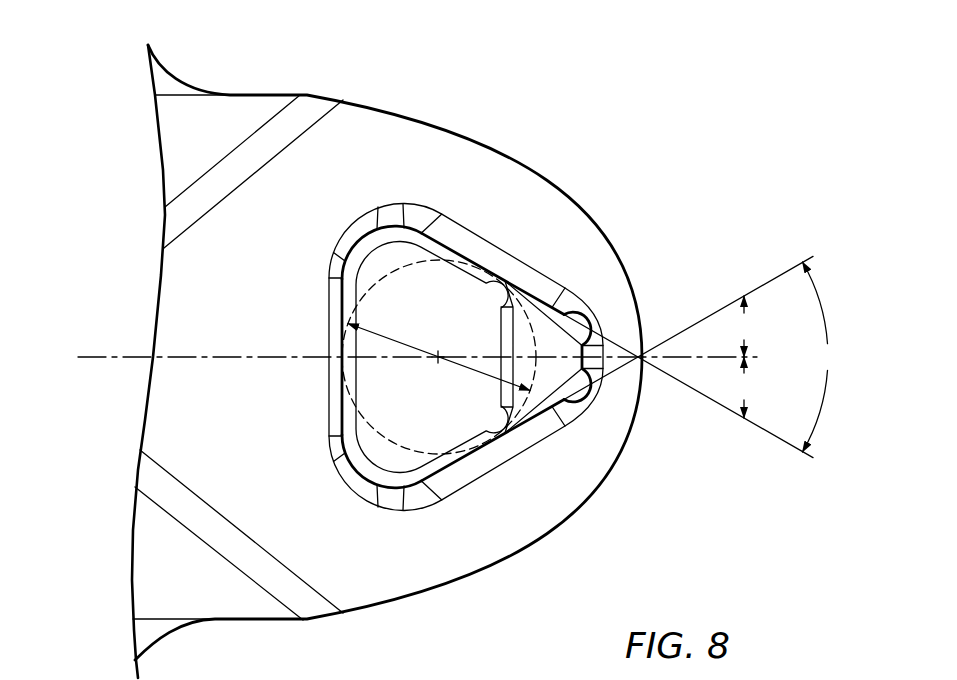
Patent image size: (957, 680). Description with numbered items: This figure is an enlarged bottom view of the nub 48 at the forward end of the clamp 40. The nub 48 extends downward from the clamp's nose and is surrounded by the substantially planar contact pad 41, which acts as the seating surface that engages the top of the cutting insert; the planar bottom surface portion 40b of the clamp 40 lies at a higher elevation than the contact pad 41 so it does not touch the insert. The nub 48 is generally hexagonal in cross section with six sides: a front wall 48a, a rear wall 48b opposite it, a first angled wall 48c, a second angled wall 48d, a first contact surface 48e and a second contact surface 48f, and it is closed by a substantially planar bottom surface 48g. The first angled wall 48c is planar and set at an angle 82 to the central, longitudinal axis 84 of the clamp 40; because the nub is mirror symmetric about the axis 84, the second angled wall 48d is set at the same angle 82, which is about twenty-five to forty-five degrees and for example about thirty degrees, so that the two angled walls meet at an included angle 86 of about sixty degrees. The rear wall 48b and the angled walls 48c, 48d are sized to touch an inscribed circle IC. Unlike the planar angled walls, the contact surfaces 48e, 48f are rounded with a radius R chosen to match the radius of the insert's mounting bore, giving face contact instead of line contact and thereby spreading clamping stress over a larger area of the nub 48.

The clamp 40 is at (387, 360).
The contact pad 41 is at (410, 148).
The bottom surface portion 40b is at (211, 584).
The nub 48 is at (468, 359).
The front wall 48a is at (610, 343).
The rear wall 48b is at (342, 330).
The first angled wall 48c is at (495, 256).
The second angled wall 48d is at (458, 465).
The first contact surface 48e is at (382, 234).
The second contact surface 48f is at (382, 480).
The bottom surface 48g is at (450, 328).
The inscribed circle IC is at (463, 368).
The radius R is at (360, 258).
The angle 82 is at (688, 356).
The central, longitudinal axis 84 is at (120, 357).
The angle 86 is at (824, 357).